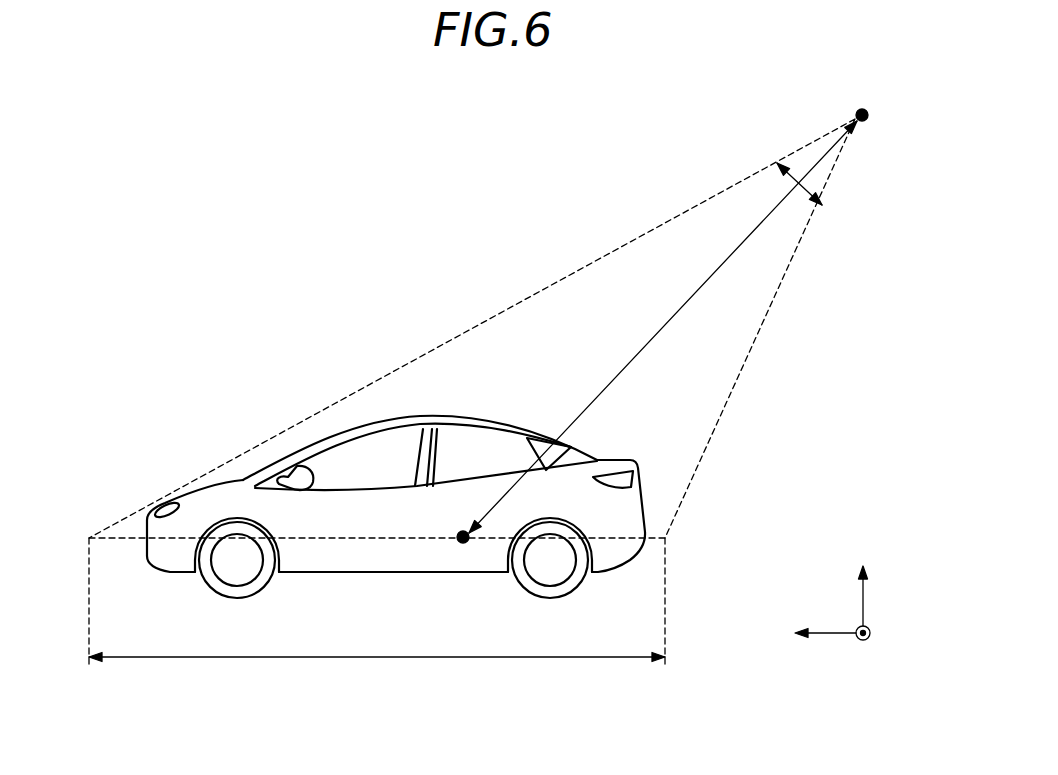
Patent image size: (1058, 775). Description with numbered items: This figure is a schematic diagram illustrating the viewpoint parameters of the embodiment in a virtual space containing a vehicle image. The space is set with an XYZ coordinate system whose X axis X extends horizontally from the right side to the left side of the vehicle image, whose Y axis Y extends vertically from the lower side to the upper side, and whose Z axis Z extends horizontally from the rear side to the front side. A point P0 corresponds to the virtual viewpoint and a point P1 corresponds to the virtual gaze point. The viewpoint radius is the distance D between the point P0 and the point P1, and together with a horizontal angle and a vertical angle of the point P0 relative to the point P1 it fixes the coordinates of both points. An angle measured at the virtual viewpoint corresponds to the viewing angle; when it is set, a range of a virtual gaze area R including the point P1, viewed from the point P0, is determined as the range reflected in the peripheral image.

The point P0 (virtual viewpoint) P0 is at (868, 111).
The point P1 (virtual gaze point) P1 is at (463, 543).
The distance D (viewpoint radius) D is at (687, 302).
The virtual gaze area R is at (377, 672).
The X axis X is at (875, 634).
The Y axis Y is at (862, 582).
The Z axis Z is at (815, 634).